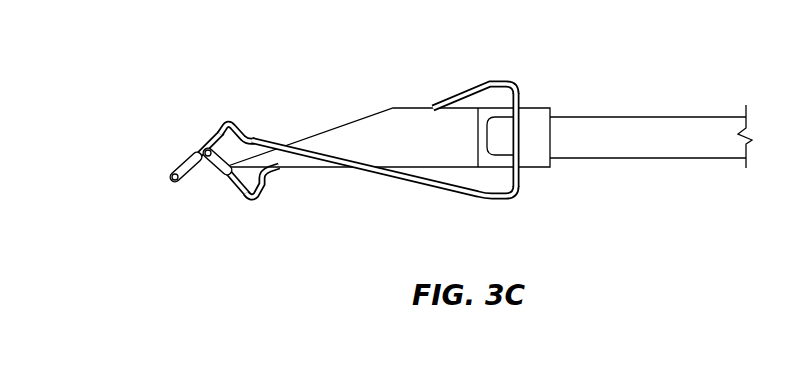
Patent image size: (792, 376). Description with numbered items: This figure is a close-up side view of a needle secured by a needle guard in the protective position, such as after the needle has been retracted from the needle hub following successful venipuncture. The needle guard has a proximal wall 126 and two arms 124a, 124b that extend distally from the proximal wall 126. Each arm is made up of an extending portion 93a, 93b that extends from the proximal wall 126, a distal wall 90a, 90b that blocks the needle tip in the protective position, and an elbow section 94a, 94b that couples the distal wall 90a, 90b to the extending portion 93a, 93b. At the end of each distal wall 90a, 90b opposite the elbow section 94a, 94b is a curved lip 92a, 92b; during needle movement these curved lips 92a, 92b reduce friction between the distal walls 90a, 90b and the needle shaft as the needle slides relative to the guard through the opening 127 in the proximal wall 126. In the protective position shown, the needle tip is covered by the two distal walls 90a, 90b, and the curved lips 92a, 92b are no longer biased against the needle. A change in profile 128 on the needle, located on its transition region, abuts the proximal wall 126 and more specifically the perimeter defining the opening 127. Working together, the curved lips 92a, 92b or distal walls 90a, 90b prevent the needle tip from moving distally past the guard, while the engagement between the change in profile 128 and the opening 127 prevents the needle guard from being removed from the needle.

The distal wall 90a is at (209, 140).
The distal wall 90b is at (232, 195).
The curved lip 92a is at (169, 184).
The curved lip 92b is at (201, 151).
The elbow section 94a is at (232, 117).
The elbow section 94b is at (255, 200).
The extending portion 93a is at (437, 100).
The extending portion 93b is at (358, 169).
The arm 124a is at (505, 205).
The arm 124b is at (456, 82).
The proximal wall 126 is at (520, 100).
The opening 127 is at (518, 137).
The change in profile 128 is at (502, 143).